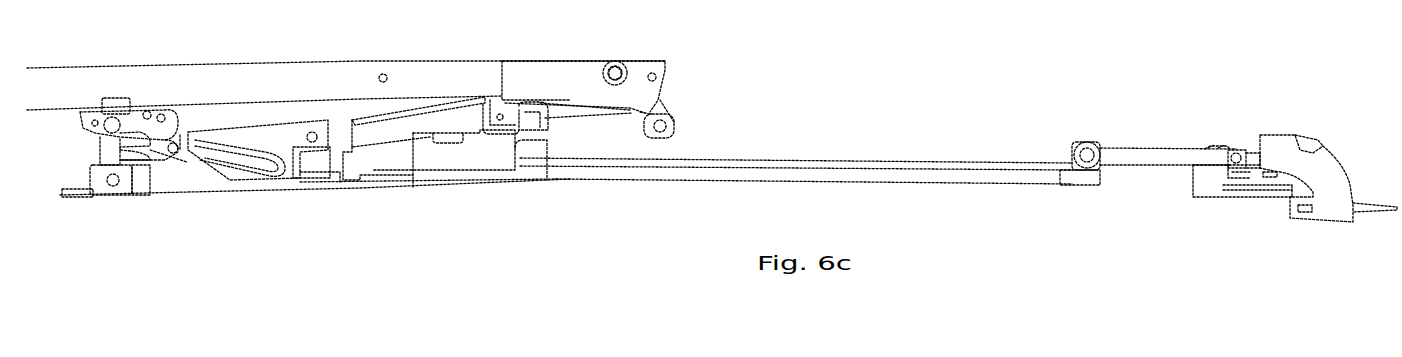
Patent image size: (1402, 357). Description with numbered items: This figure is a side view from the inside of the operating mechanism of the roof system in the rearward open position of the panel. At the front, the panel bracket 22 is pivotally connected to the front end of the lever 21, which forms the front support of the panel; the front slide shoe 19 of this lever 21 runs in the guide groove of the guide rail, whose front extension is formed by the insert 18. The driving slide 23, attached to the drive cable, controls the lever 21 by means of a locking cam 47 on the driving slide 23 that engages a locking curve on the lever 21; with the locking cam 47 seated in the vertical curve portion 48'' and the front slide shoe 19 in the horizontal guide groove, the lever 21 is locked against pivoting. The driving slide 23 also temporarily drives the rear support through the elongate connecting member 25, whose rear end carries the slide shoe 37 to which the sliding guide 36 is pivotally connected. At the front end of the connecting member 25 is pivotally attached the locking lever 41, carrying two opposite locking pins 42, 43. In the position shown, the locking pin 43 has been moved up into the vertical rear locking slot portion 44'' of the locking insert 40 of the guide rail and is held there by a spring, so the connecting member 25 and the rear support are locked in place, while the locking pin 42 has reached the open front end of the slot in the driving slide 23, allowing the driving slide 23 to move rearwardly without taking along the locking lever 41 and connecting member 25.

The insert 18 is at (1340, 203).
The front slide shoe 19 is at (670, 131).
The lever 21 is at (568, 107).
The panel bracket 22 is at (272, 68).
The driving slide 23 is at (440, 160).
The connecting member 25 is at (963, 173).
The sliding guide 36 is at (235, 117).
The slide shoe 37 is at (313, 162).
The locking insert 40 is at (1260, 185).
The locking lever 41 is at (1155, 153).
The locking pin 42 is at (1238, 150).
The locking pin 43 is at (1253, 160).
The rear locking slot portion 44'' is at (1221, 219).
The locking cam 47 is at (500, 128).
The vertical curve portion 48'' is at (531, 176).